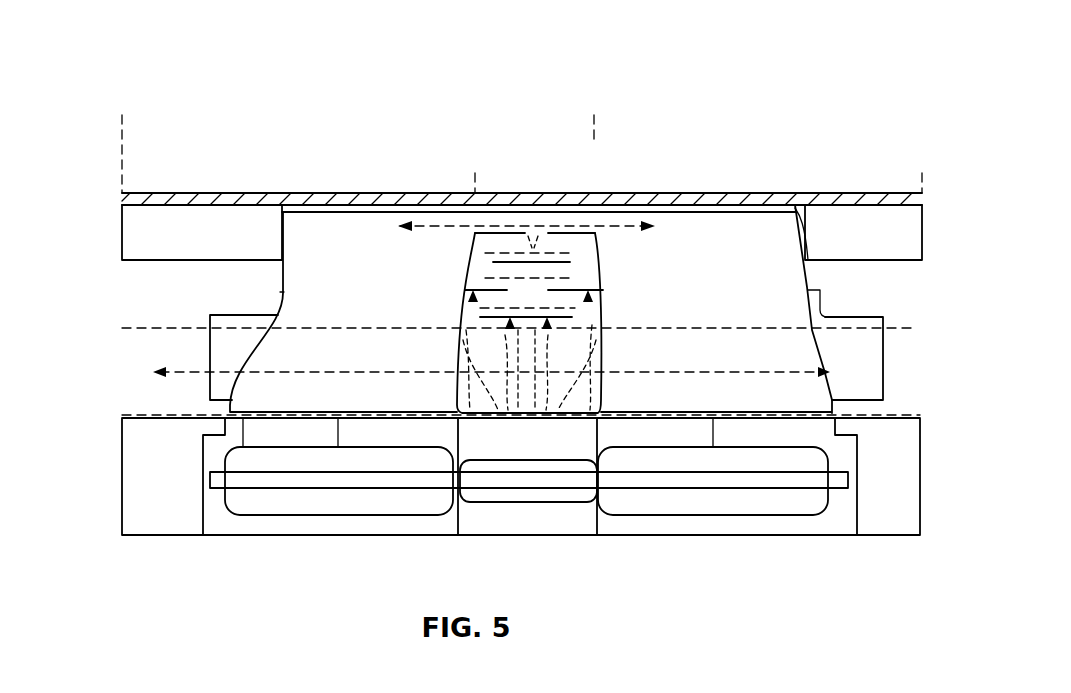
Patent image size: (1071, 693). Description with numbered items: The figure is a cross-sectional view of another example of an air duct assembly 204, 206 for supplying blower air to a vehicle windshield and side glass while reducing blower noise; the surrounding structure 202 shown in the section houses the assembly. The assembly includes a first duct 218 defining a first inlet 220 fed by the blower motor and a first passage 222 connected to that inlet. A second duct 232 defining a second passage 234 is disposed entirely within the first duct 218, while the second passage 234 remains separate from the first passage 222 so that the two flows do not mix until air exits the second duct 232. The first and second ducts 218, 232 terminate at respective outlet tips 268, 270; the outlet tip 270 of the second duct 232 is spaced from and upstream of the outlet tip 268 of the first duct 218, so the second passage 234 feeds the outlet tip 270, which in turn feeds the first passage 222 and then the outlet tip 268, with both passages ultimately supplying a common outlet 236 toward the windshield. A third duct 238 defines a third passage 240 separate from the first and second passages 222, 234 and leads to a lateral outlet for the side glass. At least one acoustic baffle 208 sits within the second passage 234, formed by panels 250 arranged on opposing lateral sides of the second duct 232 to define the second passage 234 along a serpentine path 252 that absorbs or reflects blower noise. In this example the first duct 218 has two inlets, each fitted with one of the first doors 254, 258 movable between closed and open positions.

The housing 202 is at (122, 258).
The air duct assembly 204 is at (594, 115).
The air duct assembly 206 is at (922, 173).
The acoustic baffle 208 is at (529, 323).
The first duct 218 is at (280, 292).
The first inlet 220 is at (315, 467).
The first passage 222 is at (296, 257).
The second duct 232 is at (572, 235).
The second passage 234 is at (521, 357).
The common outlet 236 is at (522, 184).
The third duct 238 is at (208, 325).
The third passage 240 is at (222, 362).
The panel 250 is at (483, 290).
The serpentine path 252 is at (528, 300).
The first door 254 is at (262, 514).
The first door 258 is at (515, 507).
The outlet tip 268 is at (358, 193).
The outlet tip 270 is at (500, 235).